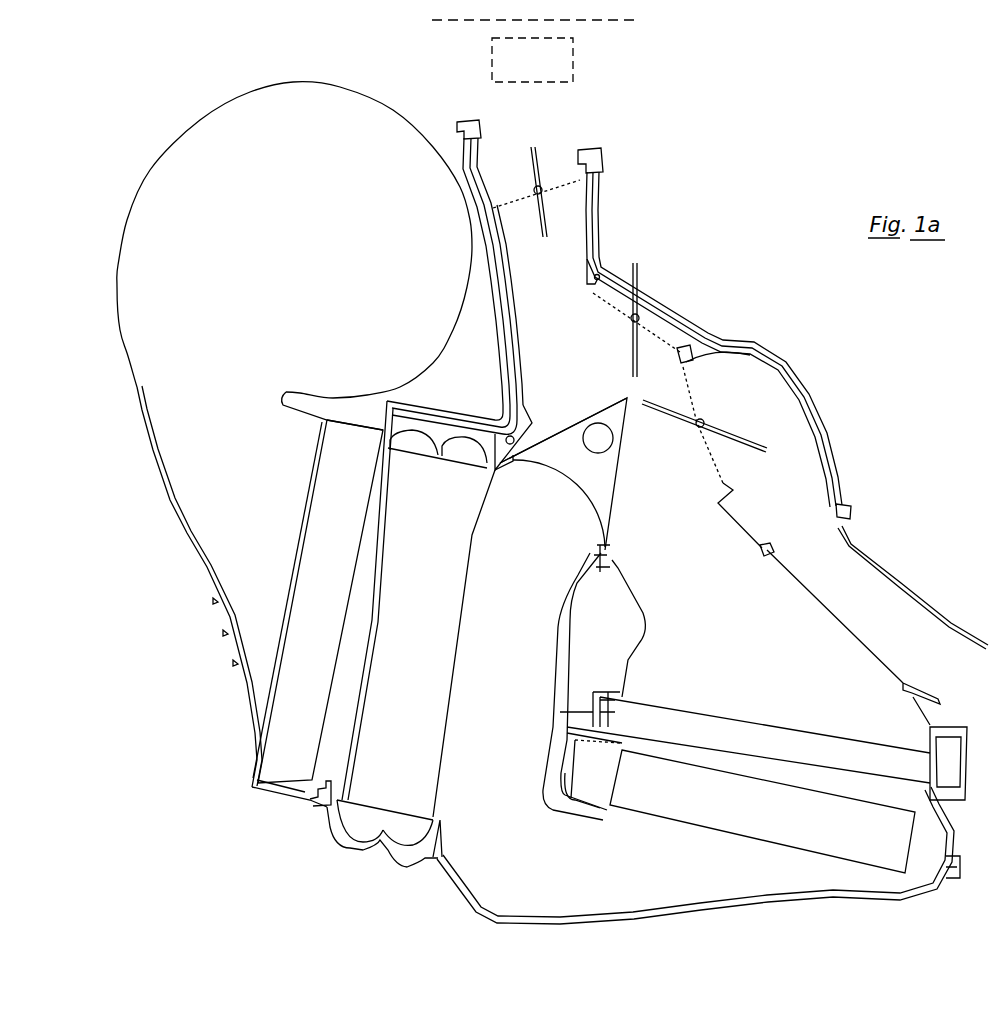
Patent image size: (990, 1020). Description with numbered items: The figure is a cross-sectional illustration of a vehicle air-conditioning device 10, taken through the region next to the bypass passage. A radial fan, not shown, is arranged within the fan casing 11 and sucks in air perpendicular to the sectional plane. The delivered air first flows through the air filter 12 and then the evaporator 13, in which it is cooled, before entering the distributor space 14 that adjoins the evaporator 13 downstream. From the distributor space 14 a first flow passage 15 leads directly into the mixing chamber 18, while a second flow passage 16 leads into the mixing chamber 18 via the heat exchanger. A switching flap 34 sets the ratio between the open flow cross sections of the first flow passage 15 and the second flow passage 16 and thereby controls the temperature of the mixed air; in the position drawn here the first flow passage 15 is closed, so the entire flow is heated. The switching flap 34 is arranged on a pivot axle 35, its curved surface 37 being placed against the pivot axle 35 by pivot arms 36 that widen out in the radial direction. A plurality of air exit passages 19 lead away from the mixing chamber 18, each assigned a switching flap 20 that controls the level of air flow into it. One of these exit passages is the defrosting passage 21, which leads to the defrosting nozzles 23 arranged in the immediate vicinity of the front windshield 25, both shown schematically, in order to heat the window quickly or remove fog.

The air-conditioning device 10 is at (697, 212).
The fan casing 11 is at (400, 121).
The air filter 12 is at (355, 494).
The evaporator 13 is at (435, 512).
The distributor space 14 is at (518, 582).
The first flow passage 15 is at (553, 490).
The second flow passage 16 is at (513, 830).
The mixing chamber 18 is at (668, 569).
The air exit passages 19 is at (550, 129).
The switching flap 20 is at (527, 213).
The defrosting passage 21 is at (572, 148).
The defrosting nozzles 23 is at (545, 74).
The front windshield 25 is at (630, 30).
The switching flap 34 is at (593, 498).
The pivot axle 35 is at (623, 397).
The pivot arms 36 is at (628, 446).
The curved surfaces 37 is at (546, 462).